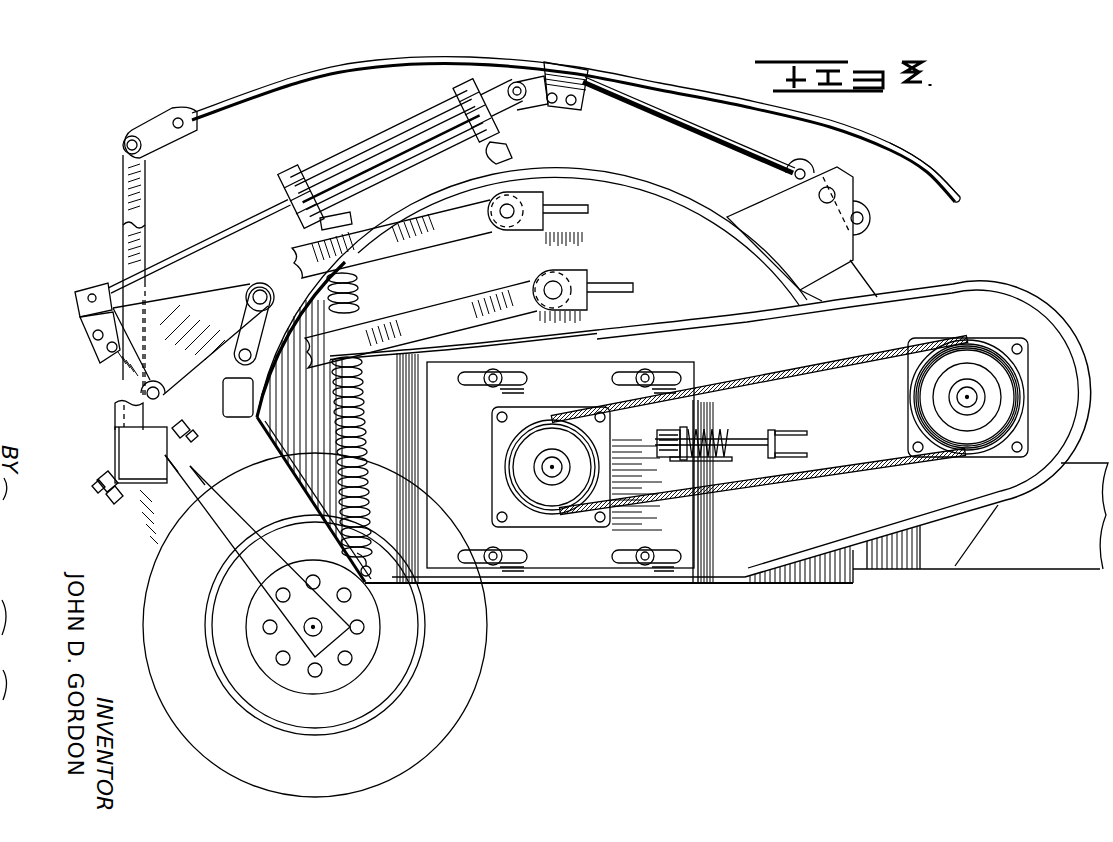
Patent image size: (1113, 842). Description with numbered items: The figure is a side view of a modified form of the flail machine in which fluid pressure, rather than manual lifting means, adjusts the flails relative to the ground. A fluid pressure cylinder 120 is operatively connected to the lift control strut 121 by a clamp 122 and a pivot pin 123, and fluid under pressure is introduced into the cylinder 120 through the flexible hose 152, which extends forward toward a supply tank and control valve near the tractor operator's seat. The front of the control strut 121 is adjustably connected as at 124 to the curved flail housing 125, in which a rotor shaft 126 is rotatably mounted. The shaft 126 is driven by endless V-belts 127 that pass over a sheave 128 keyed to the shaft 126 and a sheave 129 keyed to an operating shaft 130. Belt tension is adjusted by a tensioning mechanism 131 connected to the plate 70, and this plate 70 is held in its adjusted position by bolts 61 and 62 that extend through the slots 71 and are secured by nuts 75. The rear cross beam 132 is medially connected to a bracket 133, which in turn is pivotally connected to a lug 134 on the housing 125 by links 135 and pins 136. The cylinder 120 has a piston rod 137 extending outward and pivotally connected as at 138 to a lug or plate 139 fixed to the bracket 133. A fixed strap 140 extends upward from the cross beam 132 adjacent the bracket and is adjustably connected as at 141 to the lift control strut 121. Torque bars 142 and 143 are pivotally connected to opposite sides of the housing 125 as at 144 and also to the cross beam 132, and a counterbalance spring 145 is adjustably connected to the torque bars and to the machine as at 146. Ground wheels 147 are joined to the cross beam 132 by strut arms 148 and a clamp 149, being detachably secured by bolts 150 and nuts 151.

The bolts 61 is at (500, 377).
The mounting bolt 62 is at (660, 350).
The plate 70 is at (687, 527).
The slots 71 is at (672, 378).
The tension spring 75 is at (717, 461).
The fluid pressure cylinder 120 is at (383, 150).
The lift control strut 121 is at (460, 62).
The clamp 122 is at (570, 72).
The pivot pin 123 is at (519, 83).
The adjustable connection 124 is at (835, 196).
The curved flail housing 125 is at (697, 208).
The rotor shaft 126 is at (555, 477).
The endless V-belts 127 is at (790, 487).
The sheave 128 is at (503, 468).
The sheave 129 is at (1012, 368).
The operating shaft 130 is at (975, 397).
The tensioning mechanism 131 is at (738, 428).
The rear cross beam 132 is at (122, 442).
The bracket 133 is at (193, 305).
The lug 134 is at (233, 372).
The links 135 is at (255, 330).
The pins 136 is at (287, 303).
The piston rod 137 is at (223, 233).
The pivotal connection 138 is at (92, 290).
The lug or plate 139 is at (80, 332).
The fixed strap 140 is at (125, 187).
The adjustable connection 141 is at (133, 140).
The torque bar 142 is at (450, 235).
The torque bar 143 is at (538, 280).
The pivotal connection 144 is at (518, 210).
The counterbalance spring 145 is at (356, 290).
The spring connection 146 is at (372, 585).
The ground wheels 147 is at (457, 715).
The strut arms 148 is at (167, 520).
The clamp 149 is at (173, 473).
The bolts 150 is at (103, 476).
The nuts 151 is at (190, 432).
The flexible hose 152 is at (893, 143).